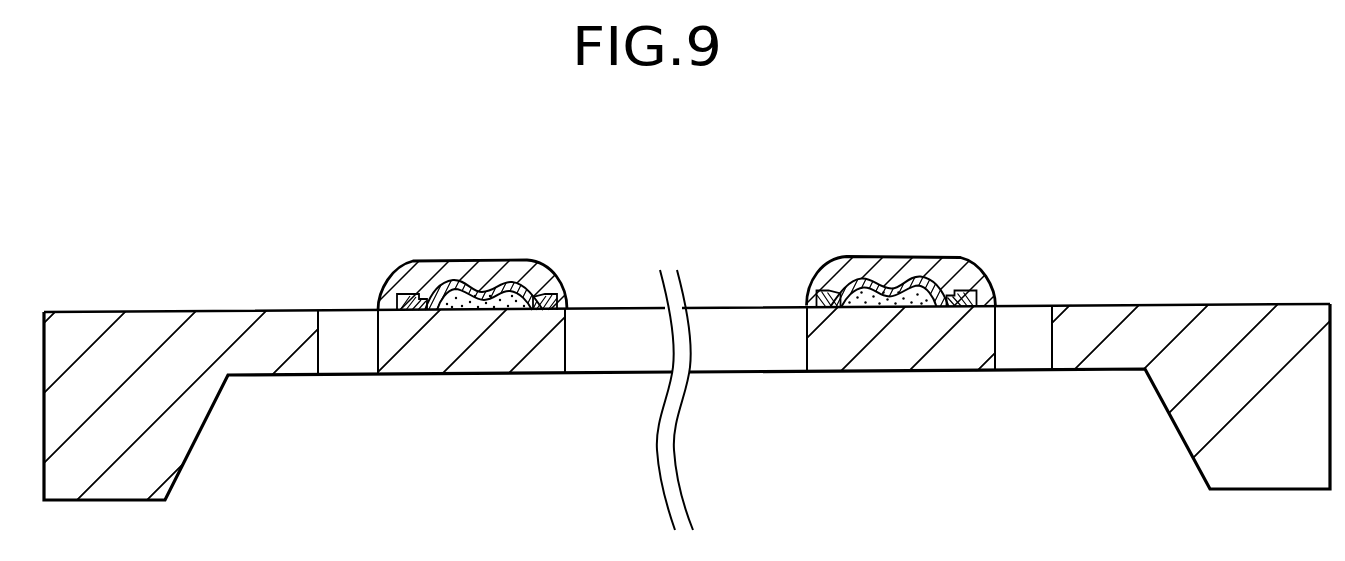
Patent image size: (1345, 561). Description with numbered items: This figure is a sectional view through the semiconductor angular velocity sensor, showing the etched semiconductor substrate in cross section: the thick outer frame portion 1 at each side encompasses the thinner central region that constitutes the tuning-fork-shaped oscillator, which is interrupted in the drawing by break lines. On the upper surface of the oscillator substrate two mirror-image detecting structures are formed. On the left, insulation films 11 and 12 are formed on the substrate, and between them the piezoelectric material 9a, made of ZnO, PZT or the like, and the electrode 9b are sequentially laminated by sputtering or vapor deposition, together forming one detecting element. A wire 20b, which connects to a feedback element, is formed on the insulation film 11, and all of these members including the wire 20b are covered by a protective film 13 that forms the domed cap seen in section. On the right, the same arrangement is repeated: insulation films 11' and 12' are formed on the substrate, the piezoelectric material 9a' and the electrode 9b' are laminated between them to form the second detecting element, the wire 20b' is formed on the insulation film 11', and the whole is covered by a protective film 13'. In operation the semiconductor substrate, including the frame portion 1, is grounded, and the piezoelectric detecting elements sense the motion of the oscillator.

The frame portion 1 is at (147, 311).
The insulation film 11 is at (375, 283).
The insulation film 12 is at (560, 266).
The piezoelectric material 9a is at (489, 249).
The electrode 9b is at (484, 252).
The protective film 13 is at (470, 254).
The wire 20b is at (454, 255).
The insulation film 11' is at (987, 262).
The insulation film 12' is at (807, 262).
The piezoelectric material 9a' is at (876, 247).
The electrode 9b' is at (882, 249).
The protective film 13' is at (900, 252).
The wire 20b' is at (915, 236).